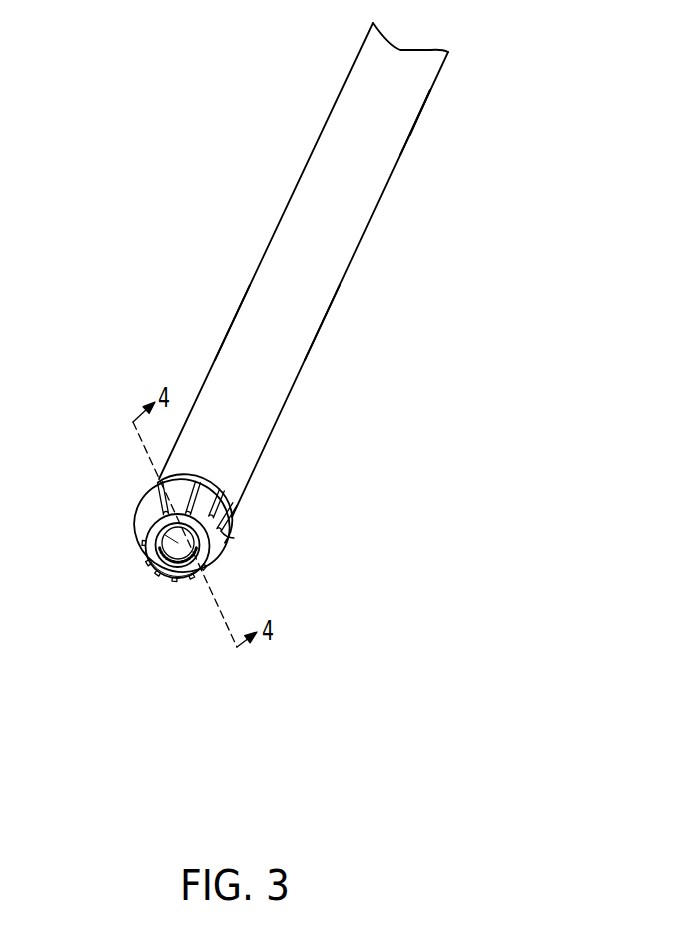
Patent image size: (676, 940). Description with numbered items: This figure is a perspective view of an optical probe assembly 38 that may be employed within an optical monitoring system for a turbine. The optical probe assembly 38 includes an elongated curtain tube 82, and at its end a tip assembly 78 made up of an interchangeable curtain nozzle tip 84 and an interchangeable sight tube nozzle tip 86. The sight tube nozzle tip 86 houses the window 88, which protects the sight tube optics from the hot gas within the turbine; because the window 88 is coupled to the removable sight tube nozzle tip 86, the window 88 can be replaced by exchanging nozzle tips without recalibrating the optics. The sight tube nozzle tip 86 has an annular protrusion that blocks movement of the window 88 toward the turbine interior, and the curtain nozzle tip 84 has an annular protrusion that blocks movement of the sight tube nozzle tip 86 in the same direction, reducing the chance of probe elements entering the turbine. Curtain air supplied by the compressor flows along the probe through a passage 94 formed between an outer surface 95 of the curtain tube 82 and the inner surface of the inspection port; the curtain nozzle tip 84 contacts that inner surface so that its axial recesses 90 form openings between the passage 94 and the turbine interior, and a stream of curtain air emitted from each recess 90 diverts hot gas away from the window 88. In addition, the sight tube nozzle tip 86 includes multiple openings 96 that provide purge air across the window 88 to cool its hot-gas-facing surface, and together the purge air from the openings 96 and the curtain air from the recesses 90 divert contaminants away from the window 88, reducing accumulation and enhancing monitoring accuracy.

The optical probe assembly 38 is at (195, 192).
The tip assembly 78 is at (105, 505).
The curtain tube 82 is at (330, 312).
The curtain nozzle tip 84 is at (163, 482).
The sight tube nozzle tip 86 is at (185, 580).
The window 88 is at (144, 530).
The axial recesses 90 is at (202, 536).
The passage 94 is at (452, 180).
The outer surface of the curtain tube 95 is at (418, 123).
The openings 96 is at (161, 575).